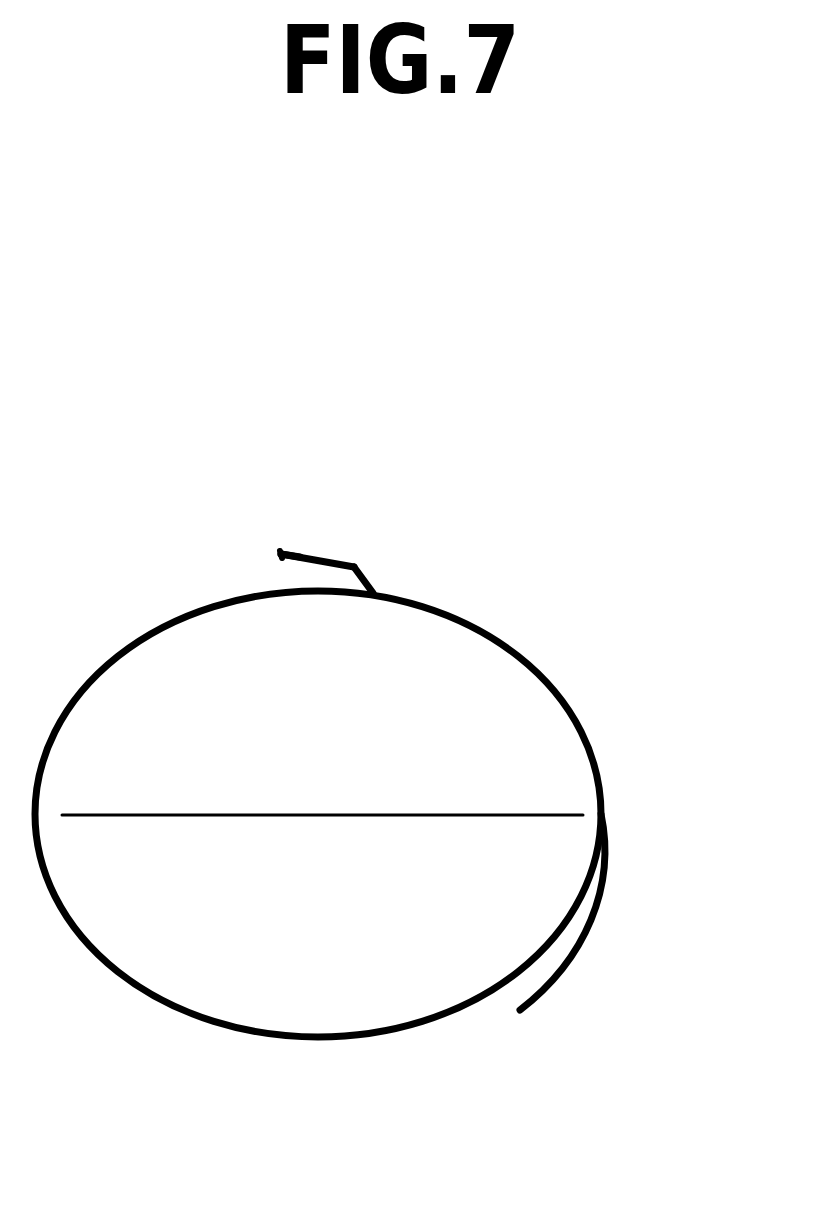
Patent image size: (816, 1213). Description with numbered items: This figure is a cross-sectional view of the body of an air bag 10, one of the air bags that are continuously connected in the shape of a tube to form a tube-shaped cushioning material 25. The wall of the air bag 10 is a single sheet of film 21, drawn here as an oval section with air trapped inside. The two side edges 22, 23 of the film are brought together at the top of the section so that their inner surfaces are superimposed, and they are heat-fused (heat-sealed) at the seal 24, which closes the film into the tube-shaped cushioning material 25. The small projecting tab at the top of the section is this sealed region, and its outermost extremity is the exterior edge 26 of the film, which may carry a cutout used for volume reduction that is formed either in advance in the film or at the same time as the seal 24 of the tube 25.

The air bag 10 is at (400, 980).
The sheet of film 21 is at (580, 720).
The side edge of film 22 is at (283, 556).
The side edge of film 23 is at (328, 557).
The heat-fused seal 24 is at (358, 568).
The tube-shaped cushioning material 25 is at (572, 922).
The exterior edge of film 26 is at (298, 554).